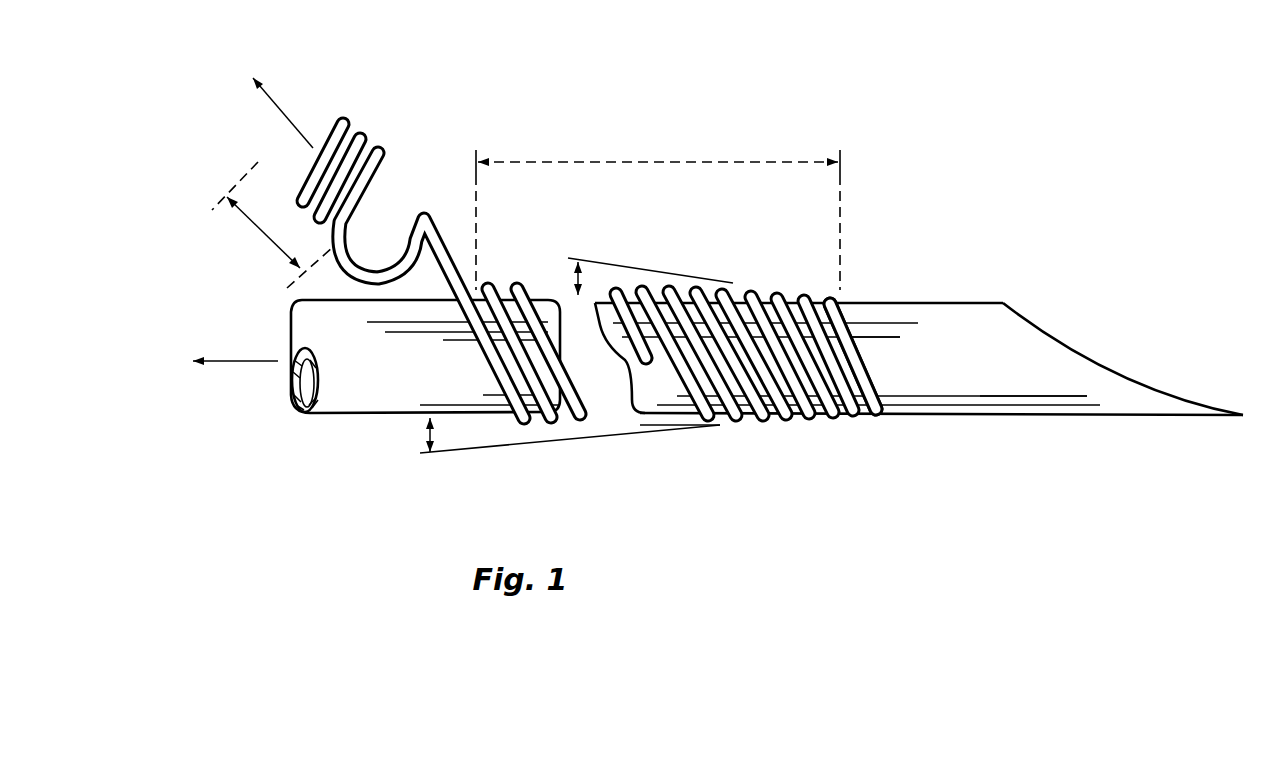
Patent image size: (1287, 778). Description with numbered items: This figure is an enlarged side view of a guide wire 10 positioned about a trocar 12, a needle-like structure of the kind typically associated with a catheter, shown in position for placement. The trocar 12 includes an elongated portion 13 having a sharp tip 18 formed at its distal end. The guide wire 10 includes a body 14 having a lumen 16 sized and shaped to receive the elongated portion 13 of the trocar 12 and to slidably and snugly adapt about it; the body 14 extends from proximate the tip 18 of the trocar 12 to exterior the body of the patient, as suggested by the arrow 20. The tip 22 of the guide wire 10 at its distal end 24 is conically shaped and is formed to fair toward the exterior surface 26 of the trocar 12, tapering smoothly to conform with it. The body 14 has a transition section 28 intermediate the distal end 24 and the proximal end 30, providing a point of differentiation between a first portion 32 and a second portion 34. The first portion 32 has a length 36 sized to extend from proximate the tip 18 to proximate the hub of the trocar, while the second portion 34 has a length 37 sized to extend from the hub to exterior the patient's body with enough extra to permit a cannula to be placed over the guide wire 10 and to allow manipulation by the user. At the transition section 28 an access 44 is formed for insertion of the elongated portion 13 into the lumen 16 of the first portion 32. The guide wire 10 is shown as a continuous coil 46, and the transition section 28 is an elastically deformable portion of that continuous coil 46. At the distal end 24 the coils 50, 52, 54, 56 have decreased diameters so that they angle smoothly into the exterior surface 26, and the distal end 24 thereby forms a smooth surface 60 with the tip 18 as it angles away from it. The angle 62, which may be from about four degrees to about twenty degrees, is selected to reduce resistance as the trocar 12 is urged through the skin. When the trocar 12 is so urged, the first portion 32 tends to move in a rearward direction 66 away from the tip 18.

The guide wire 10 is at (525, 258).
The trocar 12 is at (1062, 415).
The elongated portion 13 is at (337, 392).
The body 14 is at (740, 435).
The lumen 16 is at (862, 347).
The sharp tip 18 is at (1003, 303).
The arrow 20 is at (292, 122).
The tip 22 is at (890, 385).
The distal end 24 is at (820, 290).
The exterior surface 26 is at (1031, 385).
The transition section 28 is at (450, 218).
The proximal end 30 is at (357, 110).
The first portion 32 is at (670, 440).
The second portion 34 is at (383, 135).
The length 36 is at (720, 162).
The length 37 is at (252, 222).
The access 44 is at (462, 368).
The continuous coil 46 is at (424, 212).
The coil 50 is at (863, 418).
The coil 52 is at (830, 418).
The coil 54 is at (827, 418).
The coil 56 is at (802, 420).
The smooth surface 60 is at (608, 262).
The angle 62 is at (578, 262).
The rearward direction 66 is at (235, 376).